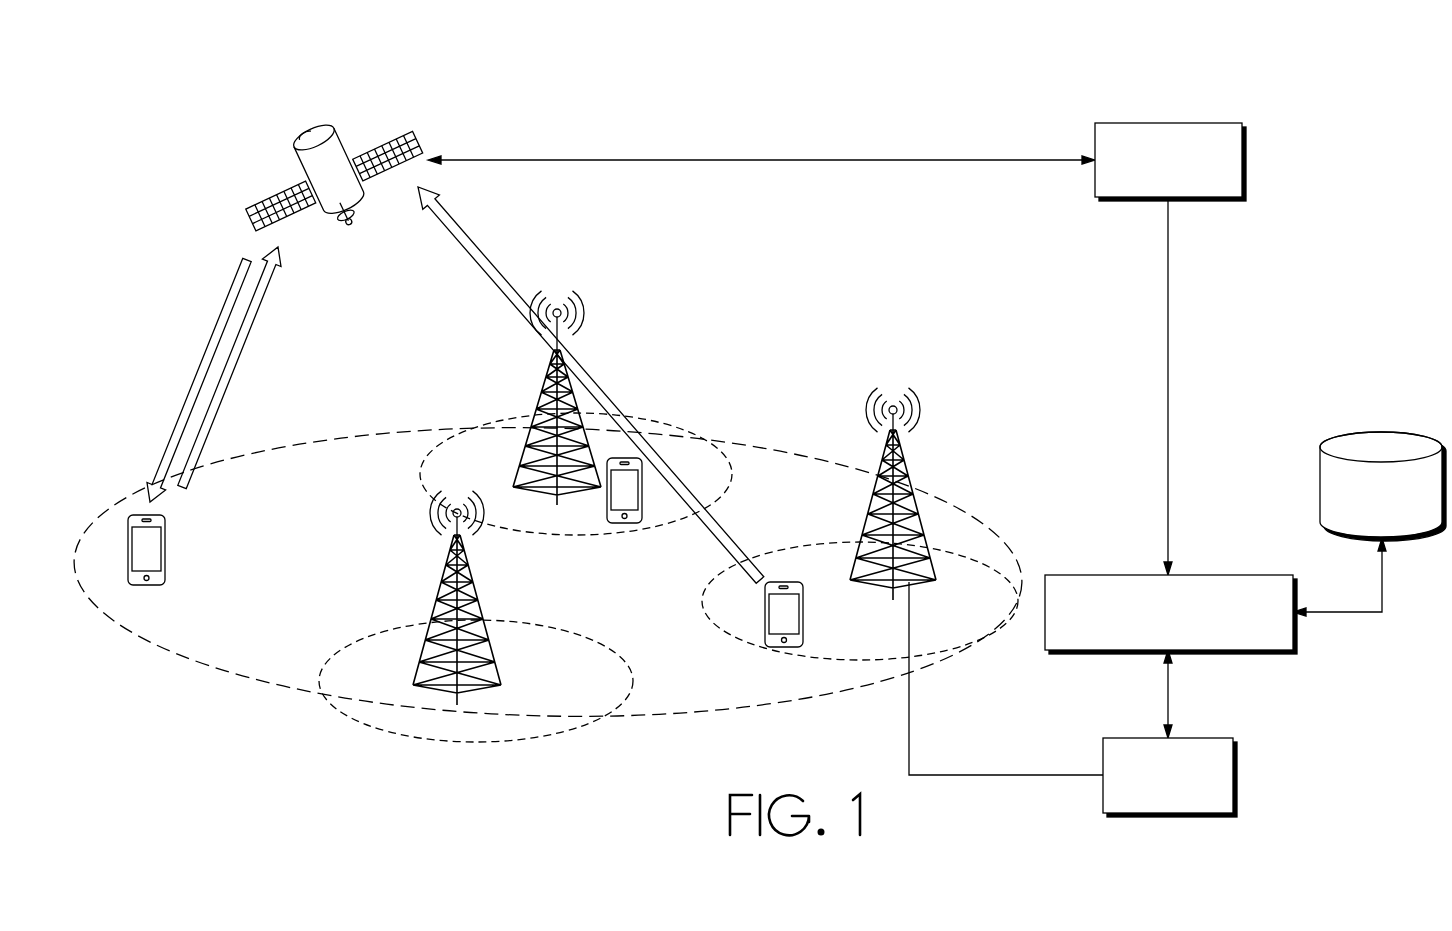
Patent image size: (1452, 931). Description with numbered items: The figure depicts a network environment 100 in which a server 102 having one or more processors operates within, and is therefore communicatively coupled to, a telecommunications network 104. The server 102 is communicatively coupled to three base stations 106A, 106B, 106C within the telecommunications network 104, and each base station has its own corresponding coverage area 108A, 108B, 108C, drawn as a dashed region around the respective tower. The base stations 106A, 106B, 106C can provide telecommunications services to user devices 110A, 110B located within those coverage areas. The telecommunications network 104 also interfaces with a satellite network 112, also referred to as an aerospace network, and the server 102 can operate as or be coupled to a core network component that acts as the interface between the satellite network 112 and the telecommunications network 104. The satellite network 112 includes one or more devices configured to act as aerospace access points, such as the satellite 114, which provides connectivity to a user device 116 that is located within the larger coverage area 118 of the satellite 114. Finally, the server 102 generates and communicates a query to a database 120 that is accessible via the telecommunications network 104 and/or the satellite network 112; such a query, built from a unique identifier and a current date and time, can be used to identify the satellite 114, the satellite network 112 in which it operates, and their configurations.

The network environment 100 is at (1340, 92).
The server 102 is at (1148, 813).
The telecommunications network 104 is at (1093, 575).
The base station 106A is at (905, 463).
The base station 106B is at (547, 372).
The base station 106C is at (442, 576).
The coverage area 108A is at (705, 608).
The coverage area 108B is at (420, 470).
The coverage area 108C is at (380, 625).
The user device 110A is at (805, 620).
The user device 110B is at (620, 523).
The satellite network 112 is at (1148, 123).
The satellite 114 is at (300, 150).
The user device 116 is at (165, 548).
The coverage area 118 is at (340, 437).
The database 120 is at (1368, 432).